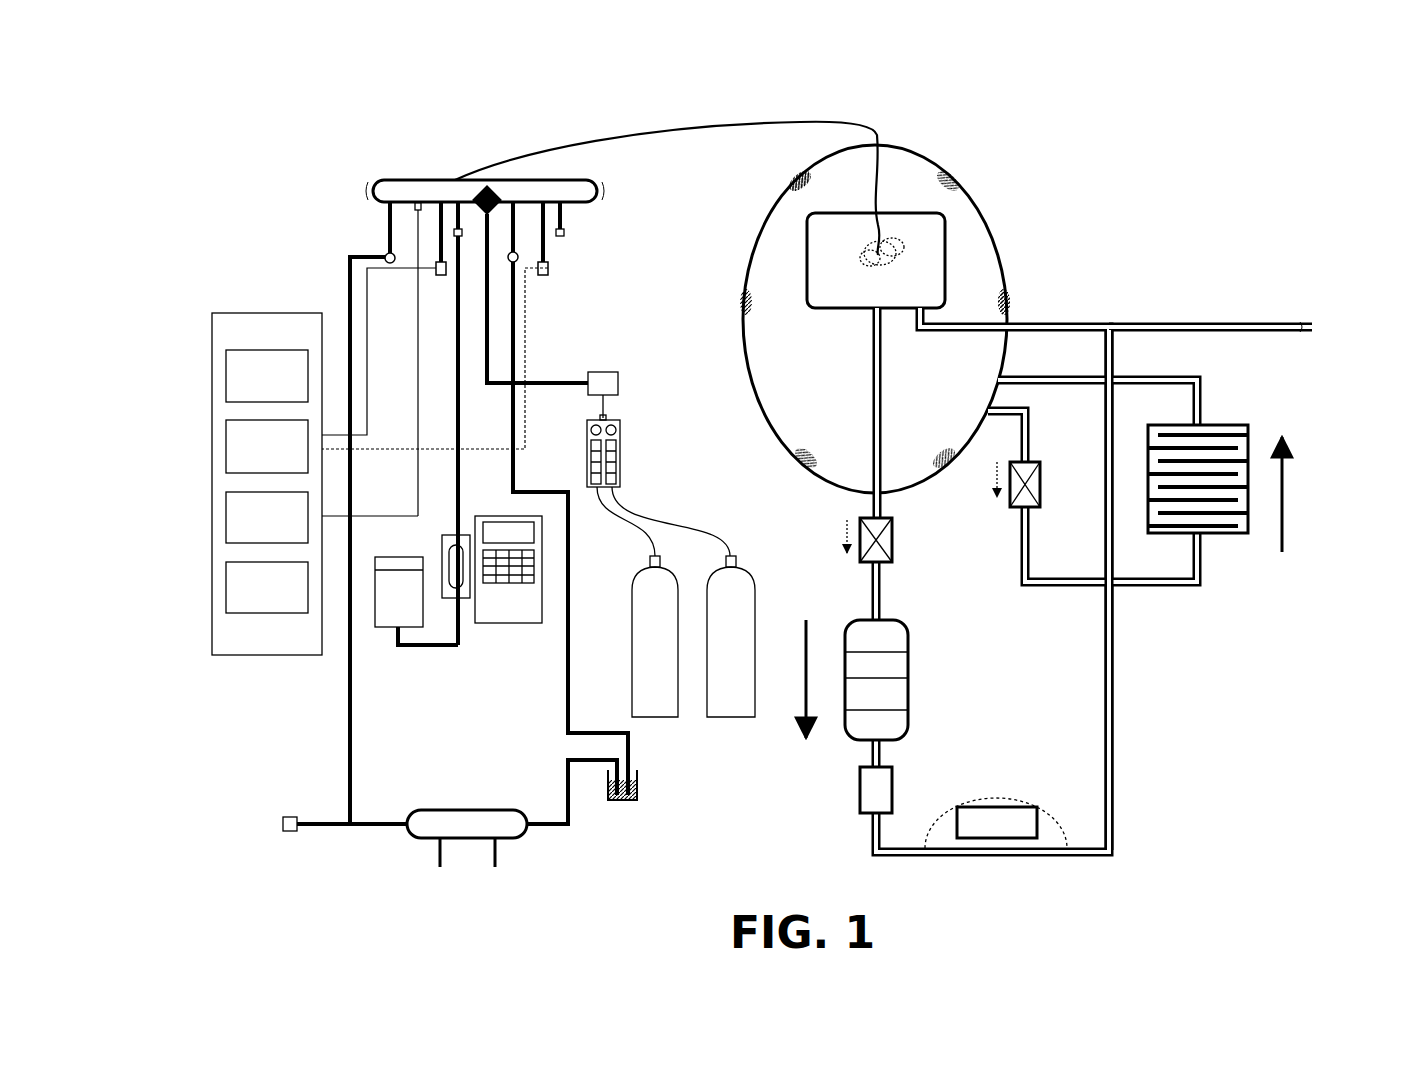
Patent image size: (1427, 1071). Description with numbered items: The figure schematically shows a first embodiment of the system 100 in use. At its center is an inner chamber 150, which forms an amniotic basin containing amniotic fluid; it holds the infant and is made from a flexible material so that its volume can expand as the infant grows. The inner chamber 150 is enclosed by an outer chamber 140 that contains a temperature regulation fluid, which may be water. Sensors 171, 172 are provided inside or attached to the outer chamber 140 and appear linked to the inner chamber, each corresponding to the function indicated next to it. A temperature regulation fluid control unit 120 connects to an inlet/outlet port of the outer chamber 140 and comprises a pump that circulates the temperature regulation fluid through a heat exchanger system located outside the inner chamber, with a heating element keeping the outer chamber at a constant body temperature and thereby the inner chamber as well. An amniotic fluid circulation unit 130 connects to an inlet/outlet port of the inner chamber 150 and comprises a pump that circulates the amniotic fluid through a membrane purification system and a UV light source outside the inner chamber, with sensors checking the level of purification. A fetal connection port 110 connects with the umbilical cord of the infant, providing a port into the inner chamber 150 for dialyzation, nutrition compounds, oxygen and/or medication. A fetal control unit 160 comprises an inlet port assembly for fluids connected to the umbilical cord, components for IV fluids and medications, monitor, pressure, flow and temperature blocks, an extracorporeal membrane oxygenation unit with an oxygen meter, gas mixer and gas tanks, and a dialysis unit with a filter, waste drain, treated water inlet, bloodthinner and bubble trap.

The system 100 is at (163, 99).
The fetal connection port 110 is at (413, 138).
The temperature regulation fluid control unit 120 is at (1324, 483).
The amniotic fluid circulation unit 130 is at (1124, 798).
The outer chamber 140 is at (886, 143).
The inner chamber 150 is at (947, 238).
The fetal control unit 160 is at (190, 291).
The sensor 171 is at (1010, 300).
The sensor 172 is at (793, 174).